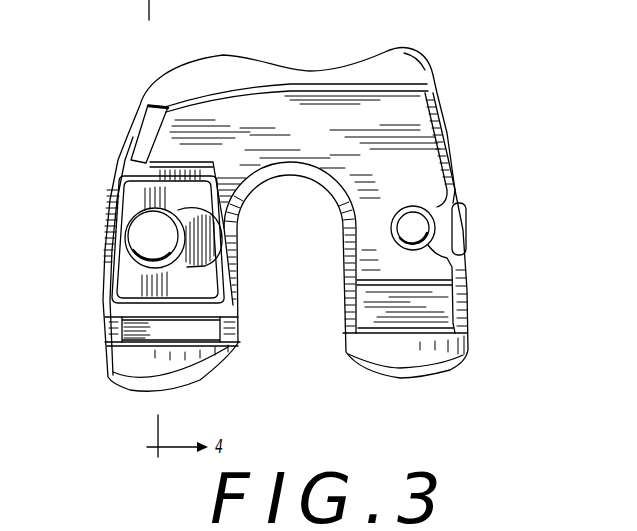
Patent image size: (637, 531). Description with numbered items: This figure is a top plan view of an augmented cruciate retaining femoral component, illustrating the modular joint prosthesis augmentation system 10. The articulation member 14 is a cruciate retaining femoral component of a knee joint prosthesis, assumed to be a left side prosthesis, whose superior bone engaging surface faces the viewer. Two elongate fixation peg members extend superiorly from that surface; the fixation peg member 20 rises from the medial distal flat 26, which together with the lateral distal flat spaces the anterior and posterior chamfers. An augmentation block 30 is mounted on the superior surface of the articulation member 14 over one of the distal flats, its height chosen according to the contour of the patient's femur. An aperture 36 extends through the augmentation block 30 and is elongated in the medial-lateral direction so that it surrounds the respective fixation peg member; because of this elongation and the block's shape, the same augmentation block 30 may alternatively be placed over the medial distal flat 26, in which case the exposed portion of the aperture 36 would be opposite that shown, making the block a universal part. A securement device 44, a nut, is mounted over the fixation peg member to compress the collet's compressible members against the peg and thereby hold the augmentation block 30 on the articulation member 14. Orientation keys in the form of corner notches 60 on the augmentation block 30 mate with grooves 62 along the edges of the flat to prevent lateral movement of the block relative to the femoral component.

The modular joint prosthesis augmentation system 10 is at (132, 83).
The articulation member 14 is at (454, 131).
The fixation peg member 20 is at (460, 207).
The medial distal flat 26 is at (393, 217).
The augmentation block 30 is at (112, 197).
The aperture 36 is at (215, 237).
The securement device 44 is at (150, 243).
The corner notches 60 is at (131, 158).
The grooves 62 is at (143, 140).